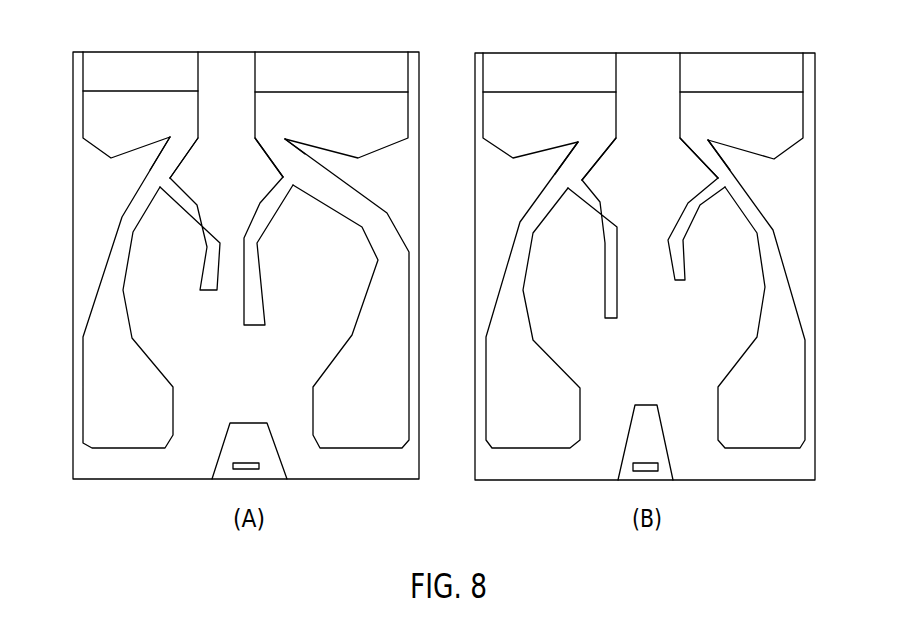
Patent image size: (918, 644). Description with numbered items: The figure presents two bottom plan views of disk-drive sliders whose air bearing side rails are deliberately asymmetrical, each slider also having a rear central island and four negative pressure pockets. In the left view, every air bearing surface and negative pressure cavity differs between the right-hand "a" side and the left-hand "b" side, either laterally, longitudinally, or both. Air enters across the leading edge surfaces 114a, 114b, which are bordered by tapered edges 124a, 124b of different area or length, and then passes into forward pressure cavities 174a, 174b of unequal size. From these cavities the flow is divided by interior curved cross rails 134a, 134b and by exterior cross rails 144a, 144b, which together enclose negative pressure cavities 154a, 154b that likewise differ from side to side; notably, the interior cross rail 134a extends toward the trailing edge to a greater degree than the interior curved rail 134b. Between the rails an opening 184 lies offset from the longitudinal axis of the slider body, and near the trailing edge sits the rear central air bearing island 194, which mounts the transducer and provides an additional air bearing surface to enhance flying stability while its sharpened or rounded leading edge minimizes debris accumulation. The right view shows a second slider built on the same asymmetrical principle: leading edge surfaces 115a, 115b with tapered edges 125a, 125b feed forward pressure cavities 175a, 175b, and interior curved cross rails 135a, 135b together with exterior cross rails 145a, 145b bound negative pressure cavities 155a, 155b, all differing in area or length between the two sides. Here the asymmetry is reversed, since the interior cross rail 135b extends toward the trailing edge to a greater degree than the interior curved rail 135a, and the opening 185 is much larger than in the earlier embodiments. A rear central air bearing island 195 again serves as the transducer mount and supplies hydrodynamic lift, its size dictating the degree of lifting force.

In FIG. 8A, the leading edge surface 114a is at (330, 122).
In FIG. 8A, the leading edge surface 114b is at (150, 130).
In FIG. 8A, the tapered edge 124a is at (300, 73).
In FIG. 8A, the tapered edge 124b is at (98, 79).
In FIG. 8A, the interior curved cross rail 134a is at (257, 305).
In FIG. 8A, the interior curved cross rail 134b is at (210, 257).
In FIG. 8A, the exterior cross rail 144a is at (380, 227).
In FIG. 8A, the exterior cross rail 144b is at (130, 217).
In FIG. 8A, the negative pressure cavity 154a is at (300, 218).
In FIG. 8A, the negative pressure cavity 154b is at (165, 222).
In FIG. 8A, the forward pressure cavity 174a is at (335, 170).
In FIG. 8A, the forward pressure cavity 174b is at (127, 183).
In FIG. 8A, the opening 184 is at (237, 287).
In FIG. 8A, the rear central air bearing island 194 is at (264, 443).
In FIG. 8B, the leading edge surface 115a is at (747, 123).
In FIG. 8B, the leading edge surface 115b is at (550, 122).
In FIG. 8B, the tapered edge 125a is at (735, 78).
In FIG. 8B, the tapered edge 125b is at (547, 72).
In FIG. 8B, the interior curved cross rail 135a is at (670, 240).
In FIG. 8B, the interior curved cross rail 135b is at (612, 272).
In FIG. 8B, the exterior cross rail 145a is at (765, 232).
In FIG. 8B, the exterior cross rail 145b is at (532, 213).
In FIG. 8B, the negative pressure cavity 155a is at (720, 210).
In FIG. 8B, the negative pressure cavity 155b is at (565, 228).
In FIG. 8B, the forward pressure cavity 175a is at (753, 168).
In FIG. 8B, the forward pressure cavity 175b is at (533, 172).
In FIG. 8B, the opening 185 is at (652, 240).
In FIG. 8B, the rear central air bearing island 195 is at (647, 433).